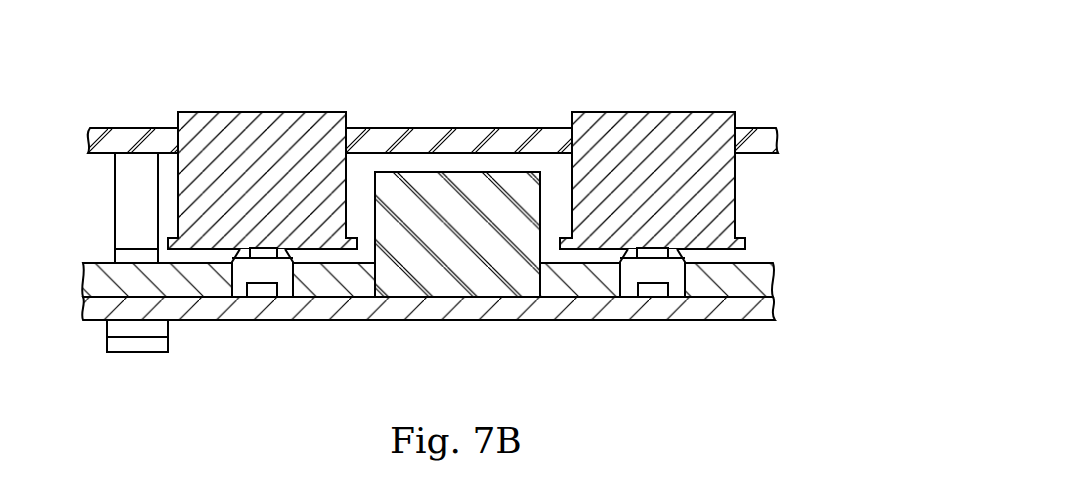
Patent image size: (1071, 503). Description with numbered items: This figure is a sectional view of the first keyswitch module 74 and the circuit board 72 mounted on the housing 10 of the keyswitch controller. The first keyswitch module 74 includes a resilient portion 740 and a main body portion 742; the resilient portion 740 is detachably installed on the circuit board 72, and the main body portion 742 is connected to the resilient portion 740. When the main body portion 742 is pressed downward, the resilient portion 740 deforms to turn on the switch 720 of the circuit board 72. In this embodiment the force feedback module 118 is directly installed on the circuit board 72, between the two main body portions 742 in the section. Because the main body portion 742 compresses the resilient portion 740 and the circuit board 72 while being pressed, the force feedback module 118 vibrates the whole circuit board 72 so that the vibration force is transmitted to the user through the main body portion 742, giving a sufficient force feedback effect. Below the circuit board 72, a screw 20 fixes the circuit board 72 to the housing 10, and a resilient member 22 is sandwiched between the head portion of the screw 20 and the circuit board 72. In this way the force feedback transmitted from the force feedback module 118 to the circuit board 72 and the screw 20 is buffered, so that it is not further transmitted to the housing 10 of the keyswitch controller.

The housing 10 is at (145, 128).
The main body portion 742 is at (262, 112).
The force feedback module 118 is at (462, 182).
The first keyswitch module 74 is at (481, 216).
The resilient portion 740 is at (753, 273).
The switch 720 is at (262, 290).
The circuit board 72 is at (727, 313).
The resilient member 22 is at (110, 328).
The screw 20 is at (142, 344).